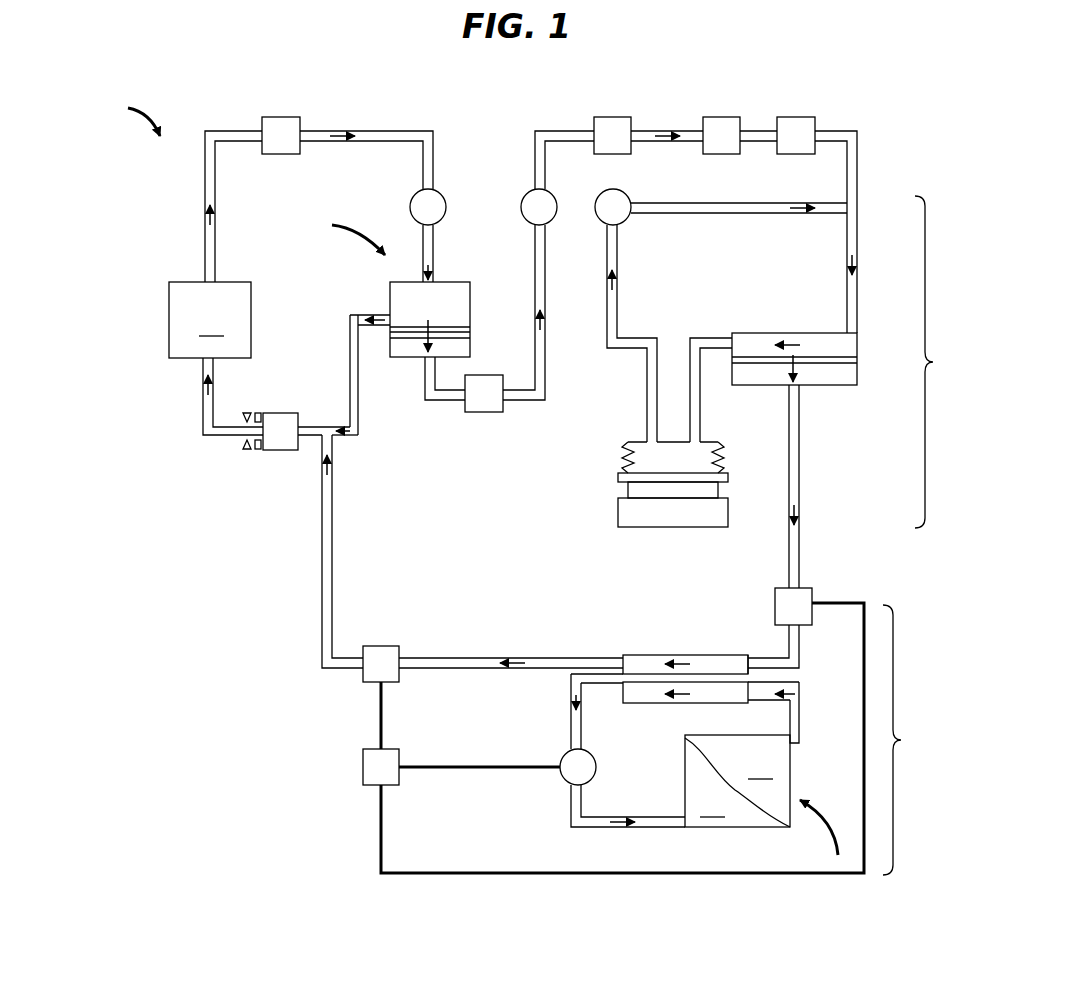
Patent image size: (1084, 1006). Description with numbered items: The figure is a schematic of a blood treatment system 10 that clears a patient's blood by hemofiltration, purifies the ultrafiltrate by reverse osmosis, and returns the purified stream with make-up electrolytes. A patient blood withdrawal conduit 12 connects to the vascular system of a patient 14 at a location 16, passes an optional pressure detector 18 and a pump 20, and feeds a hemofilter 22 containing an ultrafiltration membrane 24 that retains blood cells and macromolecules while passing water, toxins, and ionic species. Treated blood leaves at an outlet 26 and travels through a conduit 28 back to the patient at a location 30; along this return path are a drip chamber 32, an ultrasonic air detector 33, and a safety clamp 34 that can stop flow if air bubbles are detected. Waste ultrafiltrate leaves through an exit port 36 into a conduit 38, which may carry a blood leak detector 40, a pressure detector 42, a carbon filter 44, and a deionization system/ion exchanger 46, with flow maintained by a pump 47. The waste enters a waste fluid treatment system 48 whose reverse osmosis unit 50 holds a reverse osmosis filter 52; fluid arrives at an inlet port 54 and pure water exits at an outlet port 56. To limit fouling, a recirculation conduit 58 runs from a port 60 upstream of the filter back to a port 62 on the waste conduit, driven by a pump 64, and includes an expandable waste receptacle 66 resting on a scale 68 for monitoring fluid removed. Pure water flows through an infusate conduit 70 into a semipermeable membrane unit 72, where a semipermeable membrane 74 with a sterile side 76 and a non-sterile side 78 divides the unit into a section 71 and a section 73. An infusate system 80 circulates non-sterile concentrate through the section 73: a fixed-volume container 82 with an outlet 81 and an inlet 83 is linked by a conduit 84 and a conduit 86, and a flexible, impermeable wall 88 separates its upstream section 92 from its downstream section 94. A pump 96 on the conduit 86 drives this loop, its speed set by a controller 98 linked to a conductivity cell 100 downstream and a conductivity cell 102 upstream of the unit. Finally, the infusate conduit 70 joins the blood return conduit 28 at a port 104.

The blood treatment system 10 is at (117, 115).
The patient blood withdrawal conduit 12 is at (204, 193).
The patient 14 is at (210, 320).
The location 16 is at (215, 282).
The pressure detector 18 is at (280, 117).
The pump 20 is at (410, 205).
The hemofilter 22 is at (344, 232).
The ultrafiltration membrane 24 is at (415, 332).
The outlet 26 is at (388, 318).
The conduit 28 is at (350, 378).
The location 30 is at (204, 362).
The drip chamber 32 is at (283, 413).
The ultrasonic air detector 33 is at (258, 450).
The safety clamp 34 is at (247, 450).
The exit port 36 is at (425, 362).
The conduit 38 is at (547, 290).
The blood leak detector 40 is at (484, 412).
The pressure detector 42 is at (612, 117).
The carbon filter 44 is at (722, 117).
The deionization system/ion exchanger 46 is at (796, 117).
The pump 47 is at (521, 207).
The waste fluid treatment system 48 is at (944, 362).
The reverse osmosis unit 50 is at (758, 333).
The reverse osmosis filter 52 is at (857, 368).
The inlet port 54 is at (846, 333).
The outlet port 56 is at (800, 395).
The recirculation conduit 58 is at (668, 214).
The port 60 is at (730, 340).
The port 62 is at (846, 203).
The pump 64 is at (628, 198).
The expandable waste receptacle 66 is at (724, 455).
The scale 68 is at (618, 515).
The infusate conduit 70 is at (800, 500).
The section 71 is at (727, 660).
The semipermeable membrane unit 72 is at (642, 655).
The section 73 is at (640, 704).
The semipermeable membrane 74 is at (760, 682).
The side 76 is at (733, 668).
The side 78 is at (600, 676).
The infusate system 80 is at (661, 739).
The outlet 81 is at (793, 750).
The fixed-volume container 82 is at (830, 833).
The inlet 83 is at (683, 810).
The conduit 84 is at (800, 720).
The conduit 86 is at (571, 720).
The flexible, impermeable wall 88 is at (762, 822).
The upstream section 92 is at (764, 766).
The downstream section 94 is at (716, 804).
The pump 96 is at (566, 782).
The controller 98 is at (363, 767).
The conductivity cell 100 is at (381, 646).
The conductivity cell 102 is at (812, 597).
The port 104 is at (335, 438).